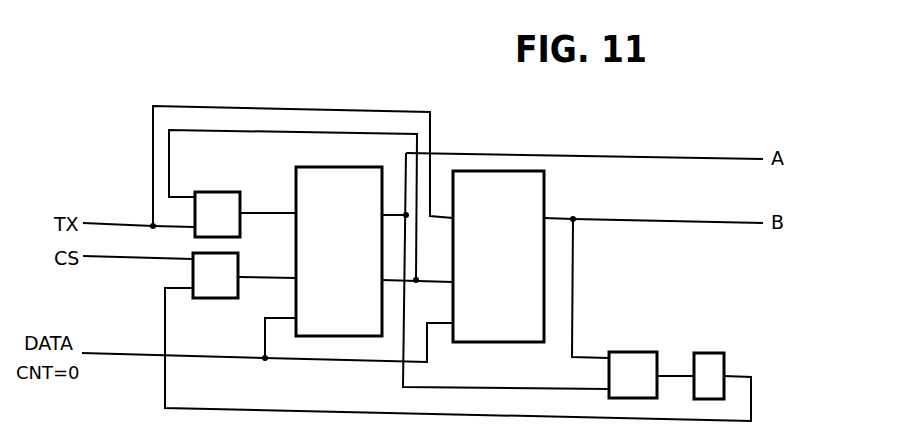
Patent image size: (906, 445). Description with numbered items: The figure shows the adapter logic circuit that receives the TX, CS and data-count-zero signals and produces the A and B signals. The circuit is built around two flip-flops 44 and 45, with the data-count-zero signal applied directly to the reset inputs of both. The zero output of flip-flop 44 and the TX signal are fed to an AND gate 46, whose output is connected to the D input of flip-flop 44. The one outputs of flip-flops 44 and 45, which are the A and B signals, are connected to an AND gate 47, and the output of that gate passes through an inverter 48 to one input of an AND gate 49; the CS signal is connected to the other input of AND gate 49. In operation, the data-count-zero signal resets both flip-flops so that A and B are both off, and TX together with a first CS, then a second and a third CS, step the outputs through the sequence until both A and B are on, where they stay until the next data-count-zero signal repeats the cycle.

The flip-flop 44 is at (296, 170).
The flip-flop 45 is at (547, 191).
The AND gate 46 is at (217, 191).
The AND gate 47 is at (625, 351).
The inverter 48 is at (700, 352).
The AND gate 49 is at (240, 260).